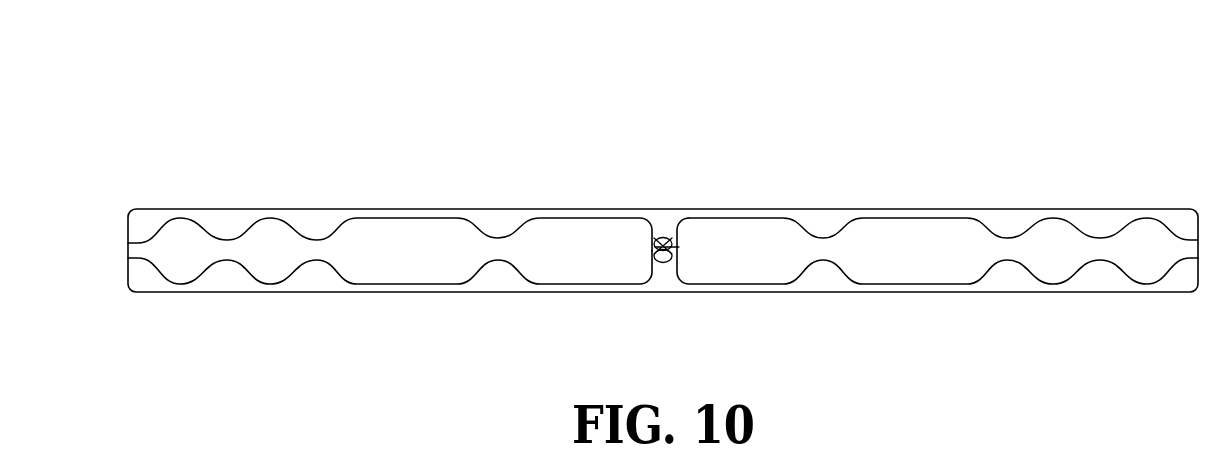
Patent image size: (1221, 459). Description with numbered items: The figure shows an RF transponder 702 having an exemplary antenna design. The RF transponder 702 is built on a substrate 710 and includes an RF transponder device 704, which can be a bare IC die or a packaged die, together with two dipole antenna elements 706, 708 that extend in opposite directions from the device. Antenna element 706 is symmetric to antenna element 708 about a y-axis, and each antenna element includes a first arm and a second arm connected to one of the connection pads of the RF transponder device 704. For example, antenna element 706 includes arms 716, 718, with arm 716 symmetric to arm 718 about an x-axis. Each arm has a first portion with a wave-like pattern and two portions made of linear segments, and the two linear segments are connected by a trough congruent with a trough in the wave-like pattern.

The RF transponder 702 is at (140, 92).
The RF transponder device 704 is at (663, 237).
The dipole antenna element 706 is at (582, 218).
The dipole antenna element 708 is at (762, 218).
The substrate 710 is at (145, 224).
The arm 716 is at (275, 218).
The arm 718 is at (270, 285).